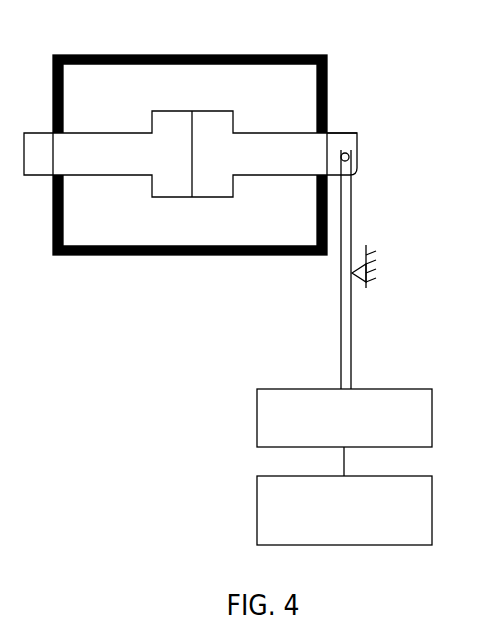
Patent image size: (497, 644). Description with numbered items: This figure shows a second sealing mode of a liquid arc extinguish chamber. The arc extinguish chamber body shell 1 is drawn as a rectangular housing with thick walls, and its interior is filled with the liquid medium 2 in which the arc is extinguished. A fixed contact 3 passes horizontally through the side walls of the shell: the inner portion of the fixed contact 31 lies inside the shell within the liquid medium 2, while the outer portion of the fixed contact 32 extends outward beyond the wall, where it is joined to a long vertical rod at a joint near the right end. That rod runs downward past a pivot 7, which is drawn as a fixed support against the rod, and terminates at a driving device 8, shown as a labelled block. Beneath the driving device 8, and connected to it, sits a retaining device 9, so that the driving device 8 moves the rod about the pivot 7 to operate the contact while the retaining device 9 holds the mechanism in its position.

The inner portion of the fixed contact 31 is at (285, 132).
The fixed contact 3 is at (331, 128).
The outer portion of the fixed contact 32 is at (349, 130).
The arc extinguish chamber body shell 1 is at (355, 150).
The liquid medium 2 is at (353, 360).
The pivot 7 is at (369, 248).
The driving device 8 is at (433, 388).
The retaining device 9 is at (433, 475).